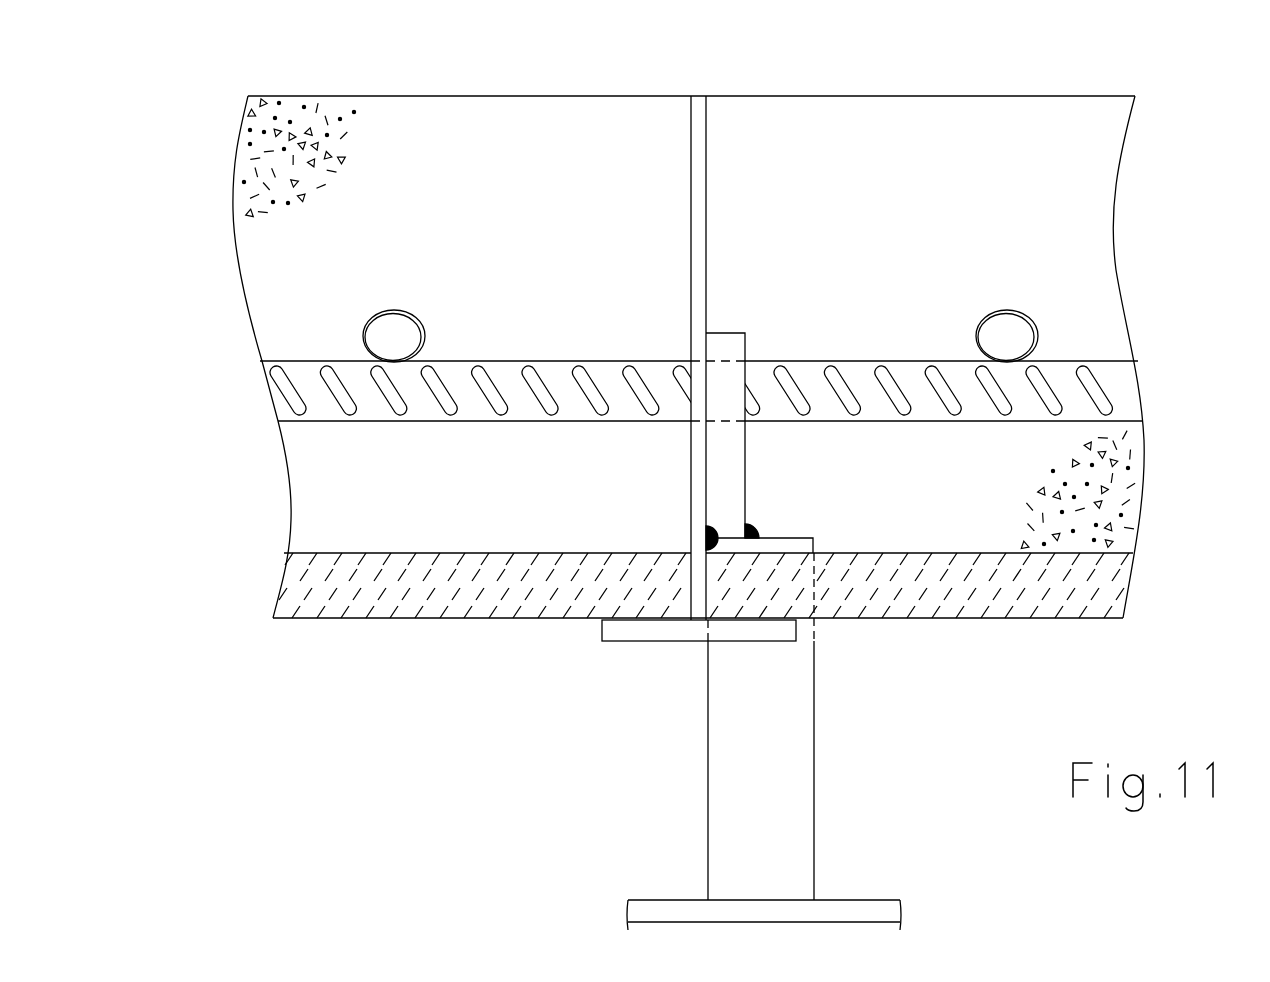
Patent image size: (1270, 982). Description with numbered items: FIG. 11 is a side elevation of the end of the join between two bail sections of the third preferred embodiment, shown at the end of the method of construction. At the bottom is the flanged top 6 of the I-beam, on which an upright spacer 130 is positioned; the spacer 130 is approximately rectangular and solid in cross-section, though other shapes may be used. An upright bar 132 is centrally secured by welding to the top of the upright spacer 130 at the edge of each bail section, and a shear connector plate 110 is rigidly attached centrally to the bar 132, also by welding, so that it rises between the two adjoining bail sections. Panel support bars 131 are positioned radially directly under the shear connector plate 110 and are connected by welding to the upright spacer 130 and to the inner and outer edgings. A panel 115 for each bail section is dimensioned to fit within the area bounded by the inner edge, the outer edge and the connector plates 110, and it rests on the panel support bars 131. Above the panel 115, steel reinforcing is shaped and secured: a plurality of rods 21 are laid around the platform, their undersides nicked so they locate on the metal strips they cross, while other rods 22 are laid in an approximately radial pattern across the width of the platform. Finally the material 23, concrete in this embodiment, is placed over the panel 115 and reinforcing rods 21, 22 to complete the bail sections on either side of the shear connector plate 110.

The material 23 is at (511, 158).
The reinforcing rods 21 is at (304, 390).
The reinforcing rods 22 is at (400, 325).
The shear connector plate 110 is at (697, 236).
The upright bar 132 is at (730, 460).
The panel 115 is at (1000, 600).
The panel support bar 131 is at (657, 632).
The upright spacer 130 is at (793, 762).
The flanged top 6 is at (895, 910).